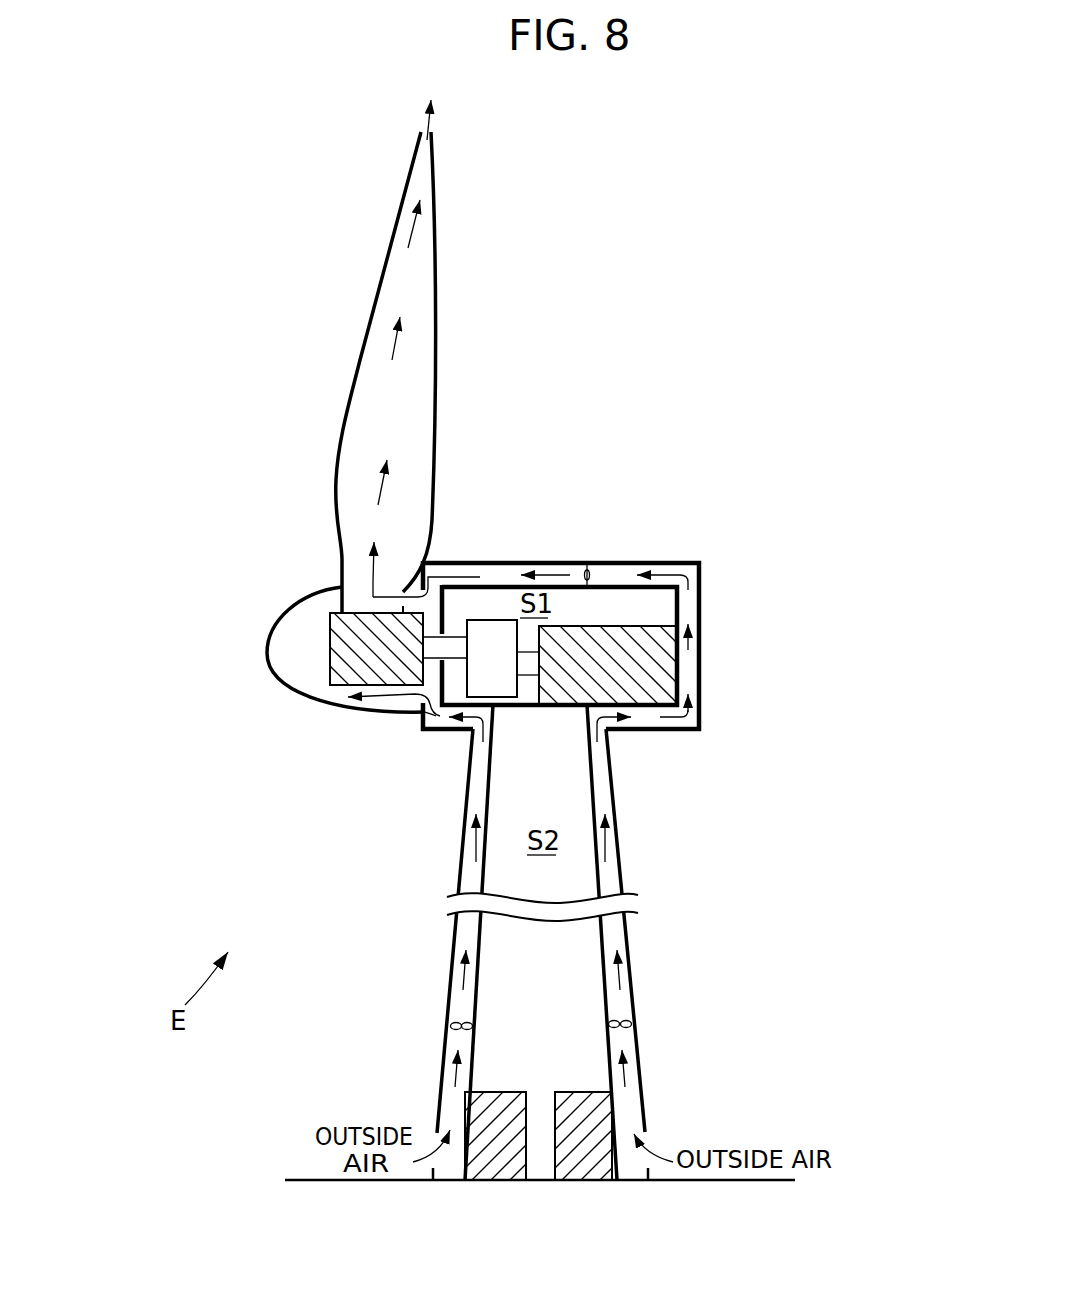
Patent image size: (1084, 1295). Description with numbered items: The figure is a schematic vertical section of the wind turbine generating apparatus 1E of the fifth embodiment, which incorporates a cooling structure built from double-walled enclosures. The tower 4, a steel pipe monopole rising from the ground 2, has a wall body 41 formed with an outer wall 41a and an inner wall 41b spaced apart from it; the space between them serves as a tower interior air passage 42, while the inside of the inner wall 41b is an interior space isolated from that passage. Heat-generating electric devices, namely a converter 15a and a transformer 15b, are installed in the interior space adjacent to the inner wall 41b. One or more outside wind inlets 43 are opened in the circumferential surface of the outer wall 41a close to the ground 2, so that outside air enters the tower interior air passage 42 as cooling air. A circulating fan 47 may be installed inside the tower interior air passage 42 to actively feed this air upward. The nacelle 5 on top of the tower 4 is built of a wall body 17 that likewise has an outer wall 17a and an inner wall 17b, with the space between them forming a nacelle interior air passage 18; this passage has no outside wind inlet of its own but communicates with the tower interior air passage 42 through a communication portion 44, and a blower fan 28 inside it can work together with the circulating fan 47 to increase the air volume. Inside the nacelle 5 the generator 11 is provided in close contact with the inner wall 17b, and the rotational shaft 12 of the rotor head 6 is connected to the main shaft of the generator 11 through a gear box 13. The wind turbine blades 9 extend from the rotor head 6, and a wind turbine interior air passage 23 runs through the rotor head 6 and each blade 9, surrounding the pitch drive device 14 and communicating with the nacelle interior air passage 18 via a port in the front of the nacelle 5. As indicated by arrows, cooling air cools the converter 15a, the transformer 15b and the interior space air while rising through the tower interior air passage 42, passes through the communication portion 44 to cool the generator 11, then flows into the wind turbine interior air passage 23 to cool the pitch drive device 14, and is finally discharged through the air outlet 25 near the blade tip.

The wind turbine generating apparatus 1E is at (670, 284).
The ground 2 is at (317, 1180).
The tower 4 is at (455, 863).
The nacelle 5 is at (560, 560).
The rotor head 6 is at (300, 606).
The wind turbine blade 9 is at (372, 303).
The generator 11 is at (660, 678).
The rotational shaft 12 is at (462, 632).
The gear box 13 is at (498, 620).
The pitch drive device 14 is at (330, 650).
The converter 15a is at (497, 1092).
The transformer 15b is at (570, 1092).
The wall body 17 is at (800, 553).
The outer wall 17a is at (700, 585).
The inner wall 17b is at (677, 603).
The nacelle interior air passage 18 is at (685, 663).
The wind turbine interior air passage 23 is at (410, 380).
The air outlet 25 is at (432, 128).
The blower fan 28 is at (589, 570).
The wall body 41 is at (611, 942).
The outer wall 41a is at (612, 800).
The inner wall 41b is at (600, 875).
The tower interior air passage 42 is at (465, 930).
The outside wind inlet 43 is at (437, 1140).
The communication portion 44 is at (450, 732).
The circulating fan 47 is at (450, 1025).